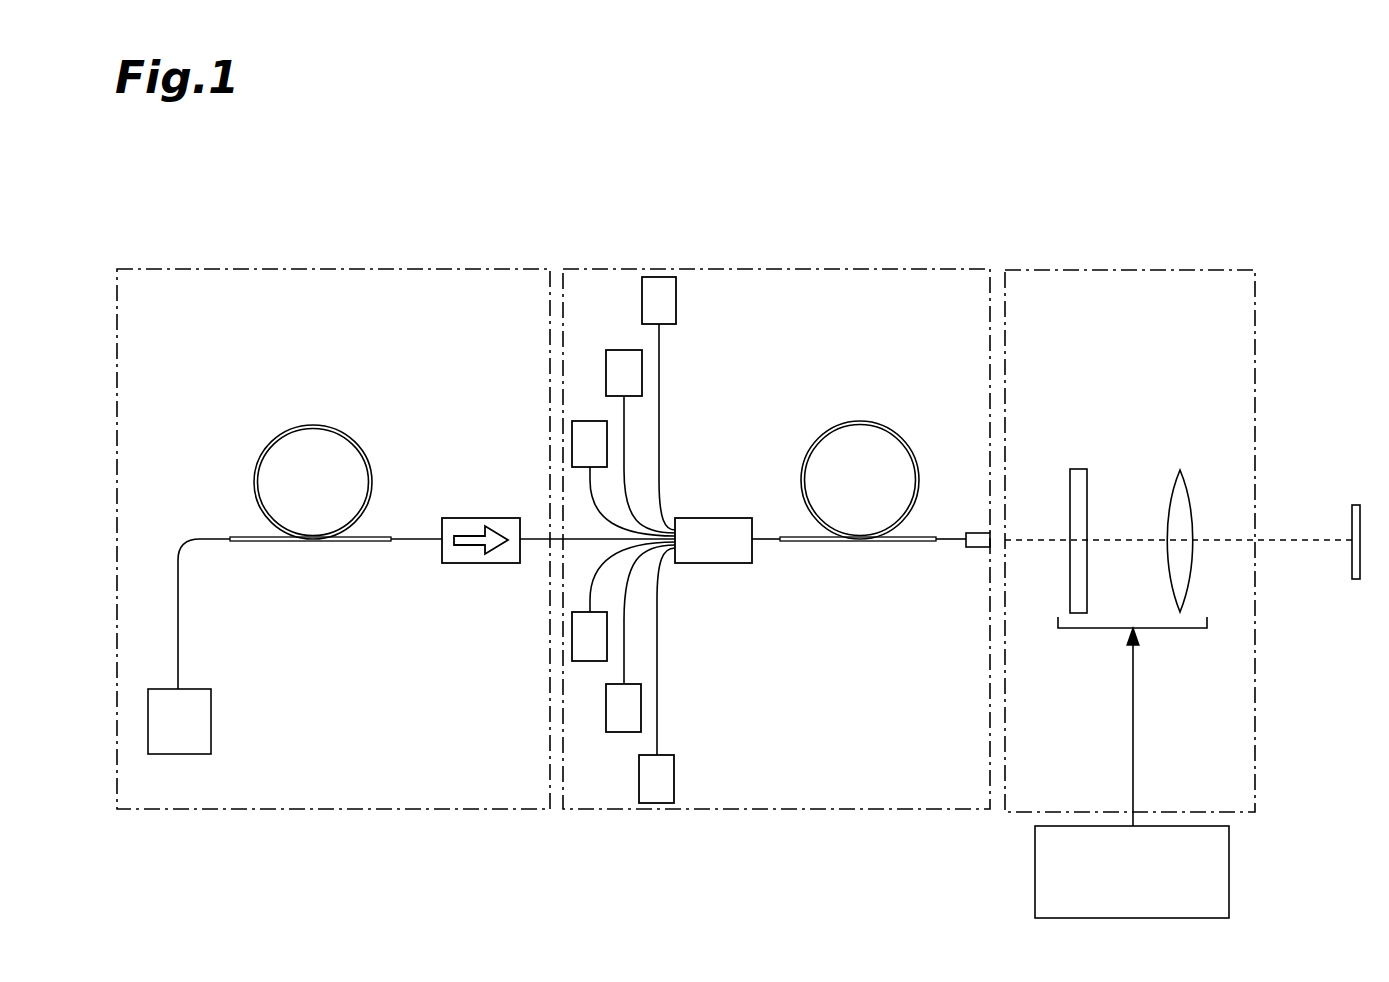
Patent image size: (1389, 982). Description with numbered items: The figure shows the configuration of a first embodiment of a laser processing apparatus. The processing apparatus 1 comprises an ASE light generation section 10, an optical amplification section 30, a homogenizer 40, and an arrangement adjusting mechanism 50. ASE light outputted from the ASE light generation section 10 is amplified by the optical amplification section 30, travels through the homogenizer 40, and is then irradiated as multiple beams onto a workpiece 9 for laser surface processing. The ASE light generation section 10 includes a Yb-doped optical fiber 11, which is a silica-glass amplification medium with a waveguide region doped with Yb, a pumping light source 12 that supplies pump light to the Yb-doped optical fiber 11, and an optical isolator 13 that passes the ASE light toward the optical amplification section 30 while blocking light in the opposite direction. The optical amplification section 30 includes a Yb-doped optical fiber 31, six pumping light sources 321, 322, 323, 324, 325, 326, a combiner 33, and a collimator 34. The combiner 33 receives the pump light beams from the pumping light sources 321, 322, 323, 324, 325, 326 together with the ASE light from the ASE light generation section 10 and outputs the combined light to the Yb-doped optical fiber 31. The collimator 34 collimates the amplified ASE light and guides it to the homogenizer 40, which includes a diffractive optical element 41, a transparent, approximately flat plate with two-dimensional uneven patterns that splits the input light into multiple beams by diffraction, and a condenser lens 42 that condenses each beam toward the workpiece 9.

The processing apparatus 1 is at (1160, 186).
The workpiece 9 is at (1357, 505).
The ASE light generation section 10 is at (505, 268).
The Yb-doped optical fiber 11 is at (313, 426).
The pumping light source 12 is at (211, 720).
The optical isolator 13 is at (477, 563).
The optical amplification section 30 is at (940, 268).
The Yb-doped optical fiber 31 is at (858, 420).
The pumping light source 321 is at (659, 277).
The pumping light source 322 is at (624, 350).
The pumping light source 323 is at (590, 421).
The pumping light source 324 is at (590, 661).
The pumping light source 325 is at (620, 732).
The pumping light source 326 is at (657, 803).
The combiner 33 is at (711, 563).
The collimator 34 is at (976, 548).
The homogenizer 40 is at (1195, 268).
The diffractive optical element 41 is at (1080, 469).
The condenser lens 42 is at (1192, 500).
The arrangement adjusting mechanism 50 is at (1229, 870).